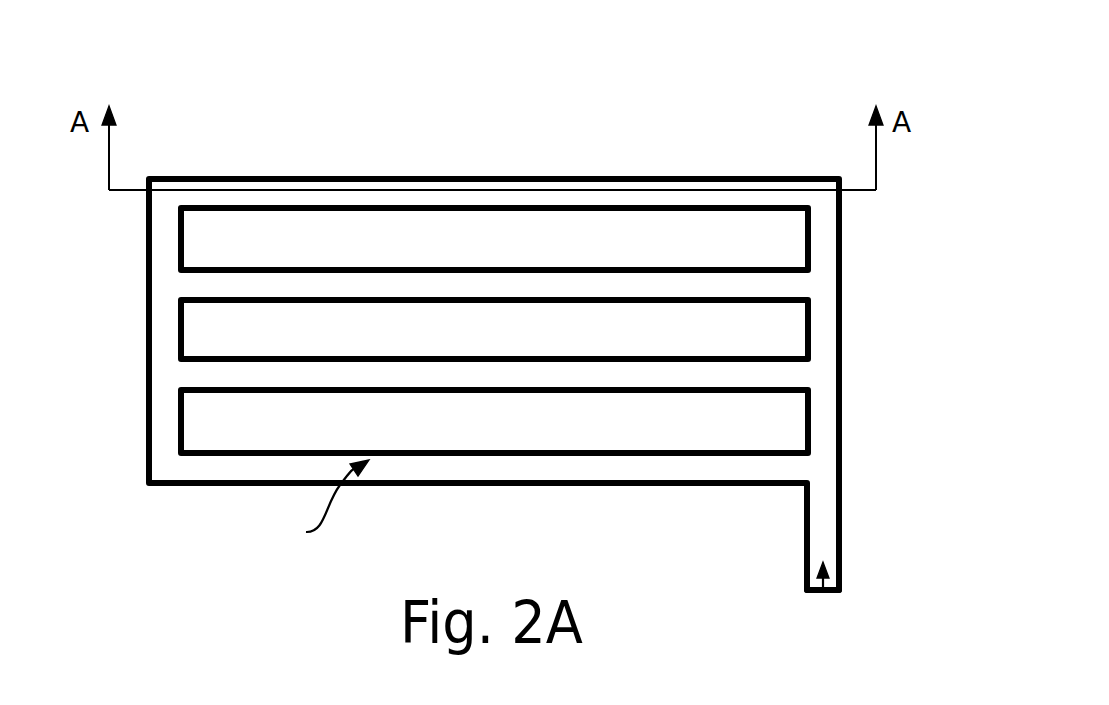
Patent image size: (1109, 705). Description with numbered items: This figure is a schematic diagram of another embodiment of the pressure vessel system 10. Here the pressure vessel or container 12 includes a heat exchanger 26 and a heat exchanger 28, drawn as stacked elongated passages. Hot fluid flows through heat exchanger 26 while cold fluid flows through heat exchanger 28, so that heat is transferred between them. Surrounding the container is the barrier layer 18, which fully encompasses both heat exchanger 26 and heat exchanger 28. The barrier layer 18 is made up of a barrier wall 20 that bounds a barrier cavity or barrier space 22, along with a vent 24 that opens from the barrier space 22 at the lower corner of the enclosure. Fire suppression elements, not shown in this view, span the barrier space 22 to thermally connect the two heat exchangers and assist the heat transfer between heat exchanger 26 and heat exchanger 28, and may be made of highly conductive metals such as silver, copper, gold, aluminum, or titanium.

The pressure vessel system 10 is at (852, 88).
The container 12 is at (635, 243).
The barrier layer 18 is at (679, 468).
The barrier wall 20 is at (146, 369).
The barrier space 22 is at (321, 506).
The vent 24 is at (823, 591).
The heat exchanger 26 is at (510, 252).
The heat exchanger 28 is at (510, 341).